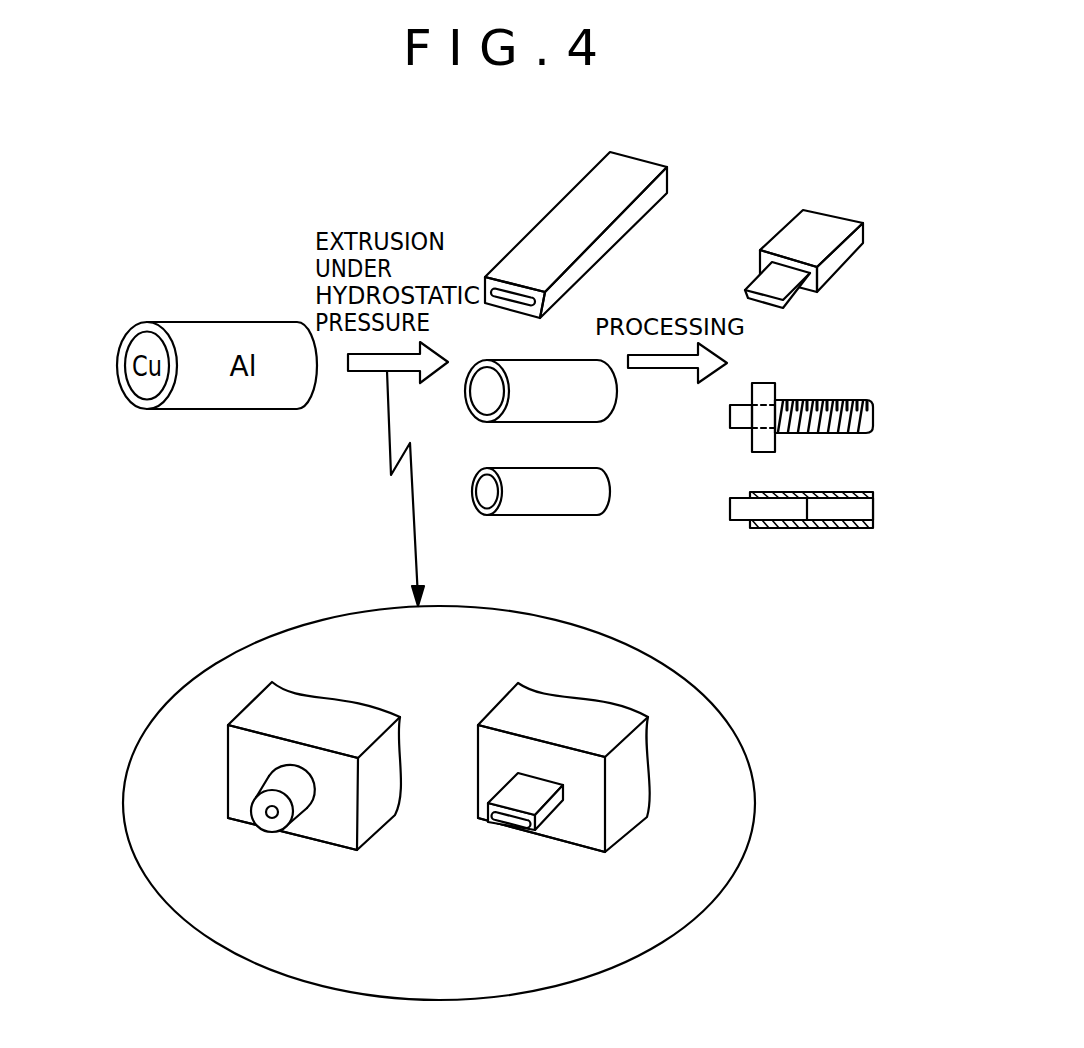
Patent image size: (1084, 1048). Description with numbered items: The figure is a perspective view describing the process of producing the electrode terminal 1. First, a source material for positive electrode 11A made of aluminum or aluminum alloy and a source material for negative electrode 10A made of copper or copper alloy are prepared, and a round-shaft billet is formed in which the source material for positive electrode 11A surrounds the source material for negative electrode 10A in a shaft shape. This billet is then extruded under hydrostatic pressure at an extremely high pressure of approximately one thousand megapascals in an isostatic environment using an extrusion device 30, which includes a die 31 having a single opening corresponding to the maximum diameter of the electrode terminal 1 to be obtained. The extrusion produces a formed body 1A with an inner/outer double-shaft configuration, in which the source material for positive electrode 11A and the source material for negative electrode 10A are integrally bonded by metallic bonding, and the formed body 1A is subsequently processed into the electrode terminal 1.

The electrode terminal 1 is at (831, 204).
The extrusion device 30 is at (483, 684).
The die 31 is at (340, 853).
The formed body 1A is at (202, 888).
The source material for negative electrode 10A is at (266, 812).
The source material for positive electrode 11A is at (278, 829).